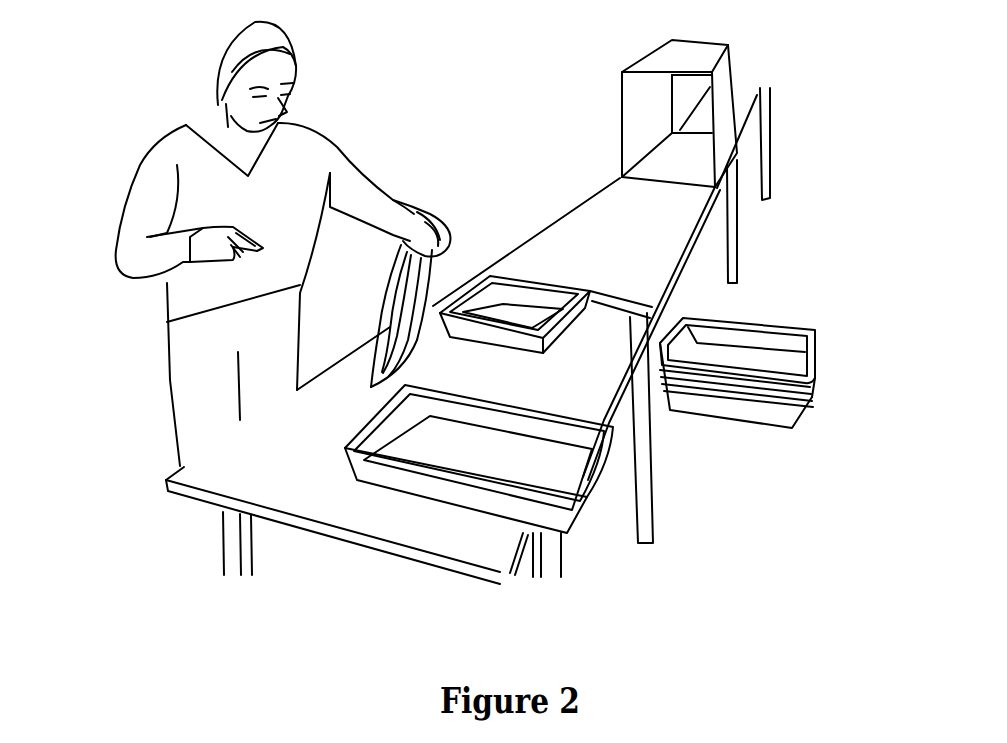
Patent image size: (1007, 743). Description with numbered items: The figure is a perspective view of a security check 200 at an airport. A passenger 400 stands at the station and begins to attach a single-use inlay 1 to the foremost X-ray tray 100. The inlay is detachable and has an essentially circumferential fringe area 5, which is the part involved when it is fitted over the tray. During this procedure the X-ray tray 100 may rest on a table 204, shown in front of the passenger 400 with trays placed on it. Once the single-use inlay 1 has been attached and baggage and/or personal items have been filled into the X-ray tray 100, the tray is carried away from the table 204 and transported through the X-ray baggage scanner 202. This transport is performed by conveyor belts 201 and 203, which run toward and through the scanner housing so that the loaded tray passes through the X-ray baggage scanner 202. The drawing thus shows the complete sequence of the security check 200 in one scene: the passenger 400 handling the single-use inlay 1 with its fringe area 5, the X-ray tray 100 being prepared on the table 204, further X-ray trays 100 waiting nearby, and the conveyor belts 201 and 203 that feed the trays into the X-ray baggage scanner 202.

The single-use inlay 1 is at (408, 275).
The fringe area 5 is at (440, 282).
The X-ray tray 100 is at (616, 368).
The security check 200 is at (673, 329).
The conveyor belt 201 is at (637, 250).
The X-ray baggage scanner 202 is at (673, 62).
The conveyor belt 203 is at (750, 100).
The table 204 is at (248, 475).
The passenger 400 is at (208, 165).